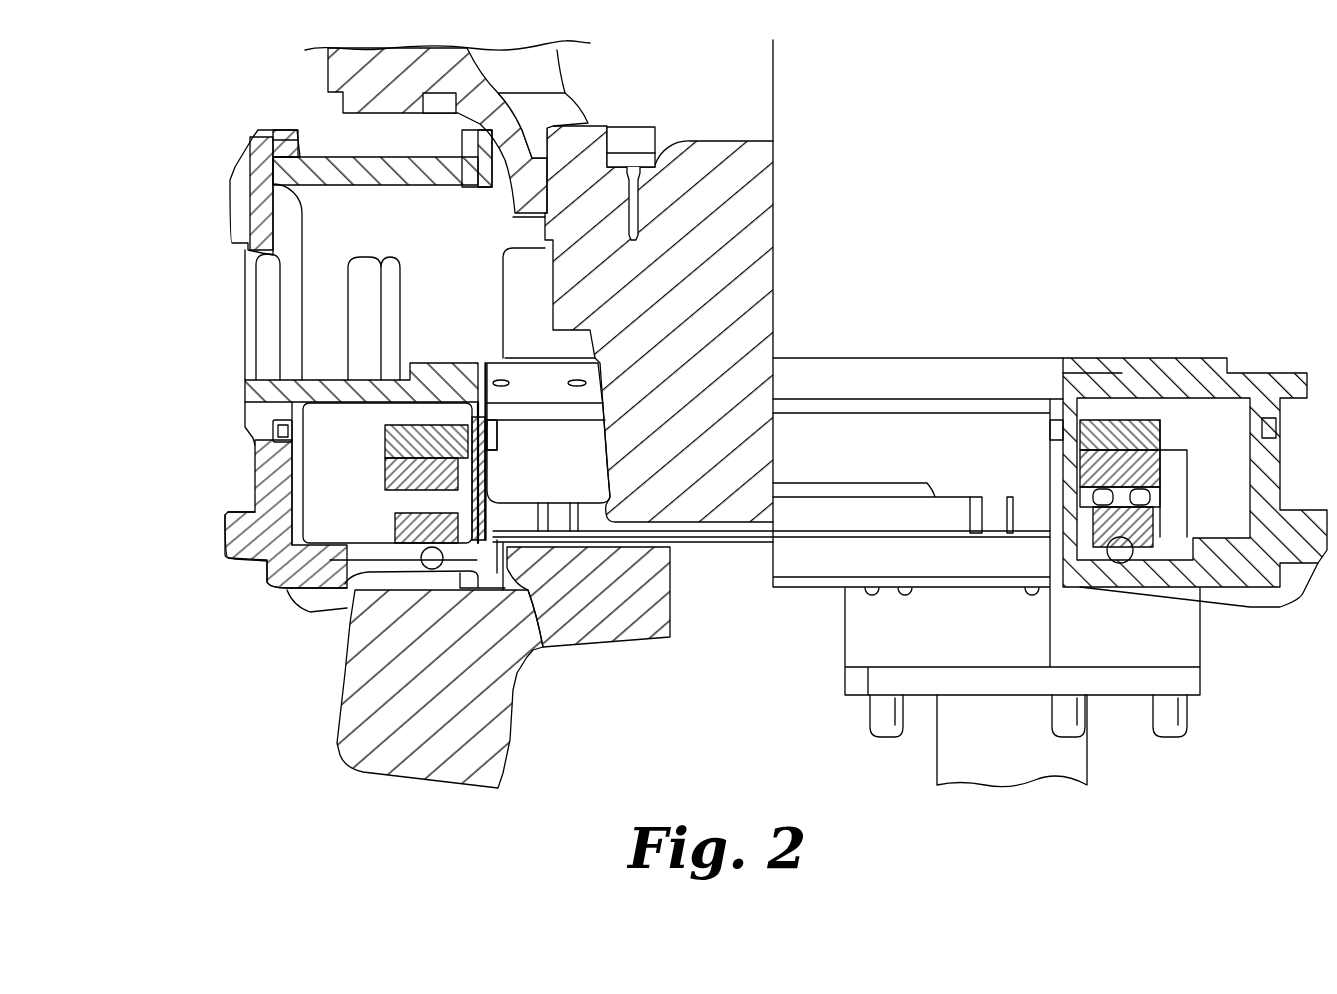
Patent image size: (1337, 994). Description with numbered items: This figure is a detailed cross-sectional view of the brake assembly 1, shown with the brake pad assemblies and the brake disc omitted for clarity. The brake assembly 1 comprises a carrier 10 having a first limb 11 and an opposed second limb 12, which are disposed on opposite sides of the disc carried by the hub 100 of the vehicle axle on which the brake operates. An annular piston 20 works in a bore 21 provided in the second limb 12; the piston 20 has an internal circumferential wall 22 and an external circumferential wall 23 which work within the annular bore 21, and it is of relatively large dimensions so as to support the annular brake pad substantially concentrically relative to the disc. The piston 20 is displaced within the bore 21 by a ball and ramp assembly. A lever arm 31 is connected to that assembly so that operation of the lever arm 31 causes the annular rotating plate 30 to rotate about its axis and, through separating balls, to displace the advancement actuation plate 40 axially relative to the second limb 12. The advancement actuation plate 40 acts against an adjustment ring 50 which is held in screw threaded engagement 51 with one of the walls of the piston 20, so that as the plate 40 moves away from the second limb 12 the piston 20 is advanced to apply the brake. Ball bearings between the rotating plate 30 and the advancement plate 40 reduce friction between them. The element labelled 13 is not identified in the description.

The brake assembly 1 is at (678, 655).
The carrier 10 is at (220, 282).
The first limb 11 is at (317, 153).
The second limb 12 is at (250, 562).
The cover 13 is at (357, 187).
The annular piston 20 is at (334, 378).
The bore 21 is at (255, 471).
The internal circumferential wall 22 is at (551, 647).
The external circumferential wall 23 is at (292, 487).
The annular rotating plate 30 is at (325, 585).
The lever arm 31 is at (947, 752).
The advancement actuation plate 40 is at (383, 473).
The adjustment ring 50 is at (383, 440).
The screw threaded engagement 51 is at (483, 440).
The hub 100 is at (730, 141).